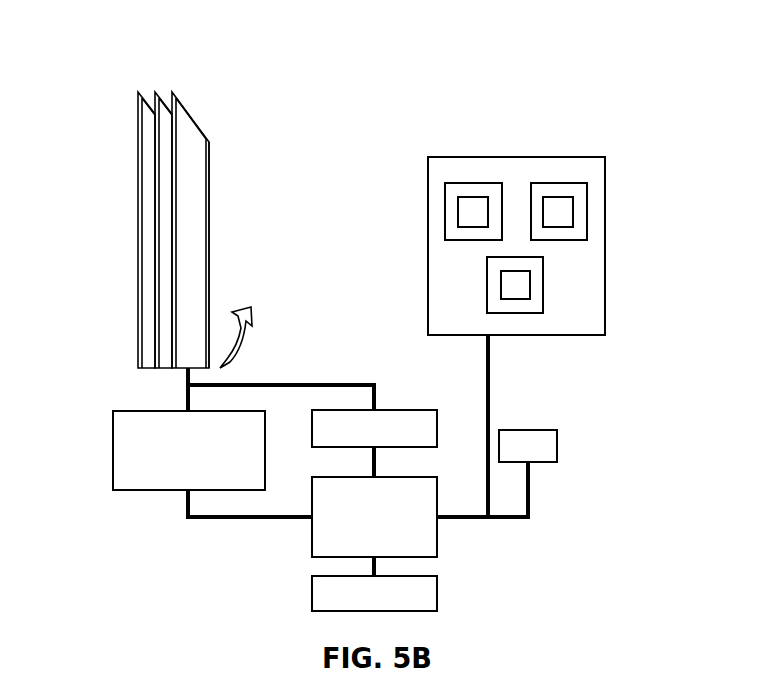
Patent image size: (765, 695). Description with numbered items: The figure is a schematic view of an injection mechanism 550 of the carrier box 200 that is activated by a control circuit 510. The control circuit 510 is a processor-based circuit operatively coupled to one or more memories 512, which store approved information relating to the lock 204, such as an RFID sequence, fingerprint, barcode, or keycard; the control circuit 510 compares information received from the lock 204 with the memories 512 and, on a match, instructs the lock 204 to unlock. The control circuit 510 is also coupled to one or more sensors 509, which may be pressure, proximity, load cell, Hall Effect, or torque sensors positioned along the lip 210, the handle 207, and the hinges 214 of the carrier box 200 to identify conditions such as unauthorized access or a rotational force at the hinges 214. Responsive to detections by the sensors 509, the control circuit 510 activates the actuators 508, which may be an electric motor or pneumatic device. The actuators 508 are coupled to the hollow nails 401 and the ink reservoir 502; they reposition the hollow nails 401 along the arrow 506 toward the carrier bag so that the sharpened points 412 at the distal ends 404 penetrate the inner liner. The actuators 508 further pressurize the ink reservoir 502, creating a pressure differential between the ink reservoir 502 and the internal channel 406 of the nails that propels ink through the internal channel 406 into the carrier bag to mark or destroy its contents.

The distal ends 404 is at (159, 185).
The sharpened points 412 is at (171, 185).
The internal channel 406 is at (192, 257).
The hollow nails 401 is at (223, 202).
The arrow 506 is at (265, 305).
The ink reservoir 502 is at (141, 500).
The actuators 508 is at (400, 407).
The control circuit 510 is at (440, 534).
The memories 512 is at (312, 593).
The lock 204 is at (558, 463).
The injection mechanism 550 is at (522, 265).
The carrier box 200 is at (514, 338).
The lip 210 is at (443, 226).
The handle 207 is at (588, 226).
The hinges 214 is at (548, 317).
The sensors 509 is at (485, 198).